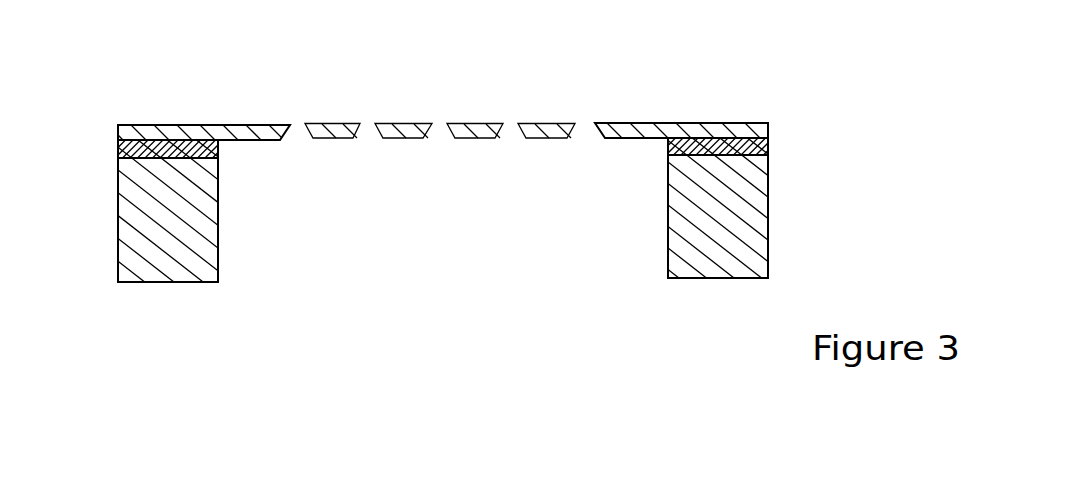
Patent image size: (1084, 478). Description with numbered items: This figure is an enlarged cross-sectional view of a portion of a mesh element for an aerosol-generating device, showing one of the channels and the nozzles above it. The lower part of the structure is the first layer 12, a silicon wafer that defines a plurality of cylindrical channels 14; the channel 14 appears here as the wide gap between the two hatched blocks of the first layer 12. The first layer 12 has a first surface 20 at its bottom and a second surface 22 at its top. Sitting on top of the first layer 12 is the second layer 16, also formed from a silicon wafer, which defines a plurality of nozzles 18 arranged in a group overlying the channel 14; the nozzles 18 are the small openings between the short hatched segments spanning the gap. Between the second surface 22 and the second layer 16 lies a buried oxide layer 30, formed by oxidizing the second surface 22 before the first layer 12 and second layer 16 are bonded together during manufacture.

The first layer 12 is at (133, 193).
The cylindrical channels 14 is at (443, 250).
The second layer 16 is at (750, 128).
The nozzles 18 is at (440, 122).
The first surface 20 is at (167, 282).
The second surface 22 is at (167, 139).
The buried oxide layer 30 is at (132, 149).